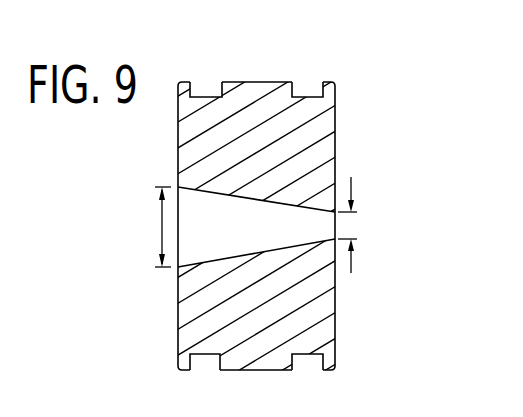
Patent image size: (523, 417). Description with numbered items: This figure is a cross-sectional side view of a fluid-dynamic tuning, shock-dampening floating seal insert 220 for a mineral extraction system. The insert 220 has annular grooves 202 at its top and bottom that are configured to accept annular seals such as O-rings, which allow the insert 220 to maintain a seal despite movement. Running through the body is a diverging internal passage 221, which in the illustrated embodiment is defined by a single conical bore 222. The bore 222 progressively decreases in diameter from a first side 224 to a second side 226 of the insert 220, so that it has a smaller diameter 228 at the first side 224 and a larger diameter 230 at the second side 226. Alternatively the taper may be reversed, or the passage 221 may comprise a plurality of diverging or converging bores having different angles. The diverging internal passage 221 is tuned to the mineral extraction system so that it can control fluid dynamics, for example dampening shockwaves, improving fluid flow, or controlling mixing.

The floating seal insert 220 is at (338, 83).
The annular grooves 202 is at (203, 95).
The second side 226 is at (178, 132).
The first side 224 is at (336, 140).
The conical bore 222 is at (300, 223).
The diverging internal passage 221 is at (207, 245).
The larger diameter 230 is at (162, 227).
The smaller diameter 228 is at (351, 263).